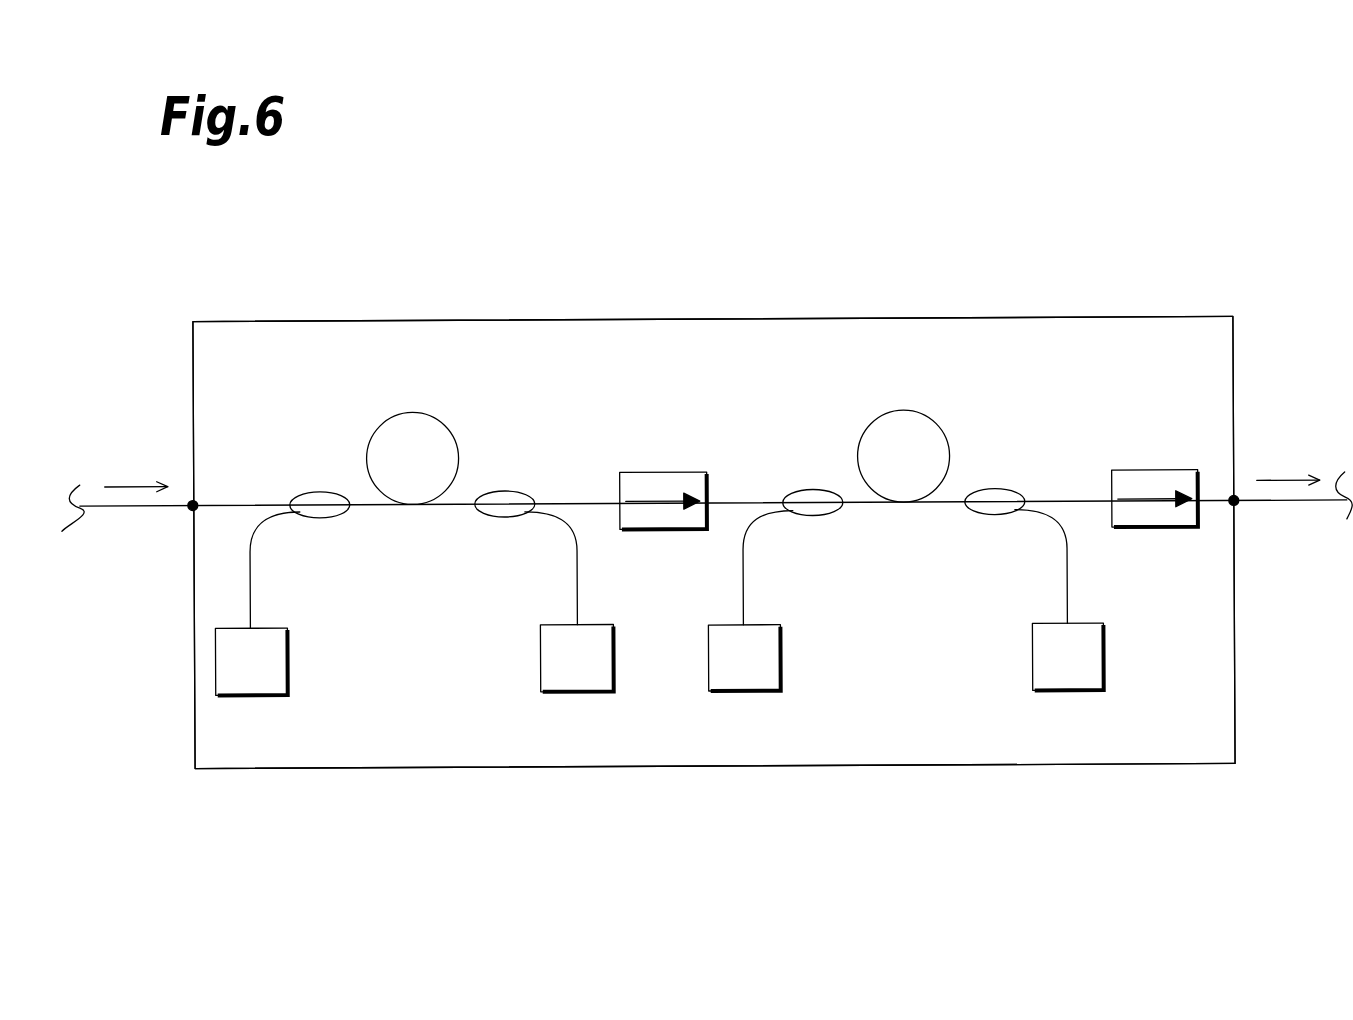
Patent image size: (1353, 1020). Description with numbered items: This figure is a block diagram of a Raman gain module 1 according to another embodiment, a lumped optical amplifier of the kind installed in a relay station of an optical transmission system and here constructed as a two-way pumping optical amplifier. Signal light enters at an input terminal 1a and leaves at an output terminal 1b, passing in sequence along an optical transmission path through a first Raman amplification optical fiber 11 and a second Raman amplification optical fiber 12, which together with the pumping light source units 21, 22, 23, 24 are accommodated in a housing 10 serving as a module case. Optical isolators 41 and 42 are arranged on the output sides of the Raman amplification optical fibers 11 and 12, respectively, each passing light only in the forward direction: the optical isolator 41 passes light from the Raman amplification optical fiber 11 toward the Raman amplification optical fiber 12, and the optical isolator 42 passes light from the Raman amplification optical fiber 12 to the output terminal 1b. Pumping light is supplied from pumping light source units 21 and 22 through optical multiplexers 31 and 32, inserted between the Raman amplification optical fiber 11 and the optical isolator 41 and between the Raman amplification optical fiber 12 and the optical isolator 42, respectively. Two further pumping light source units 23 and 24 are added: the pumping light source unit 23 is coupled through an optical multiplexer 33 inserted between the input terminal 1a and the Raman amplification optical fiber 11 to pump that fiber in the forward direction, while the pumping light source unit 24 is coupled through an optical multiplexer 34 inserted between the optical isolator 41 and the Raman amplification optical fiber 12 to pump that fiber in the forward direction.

The Raman gain module 1 is at (994, 305).
The input terminal 1a is at (188, 510).
The output terminal 1b is at (1238, 506).
The housing 10 is at (433, 319).
The Raman amplification optical fiber 11 is at (430, 412).
The Raman amplification optical fiber 12 is at (922, 411).
The pumping light source unit 21 is at (540, 660).
The pumping light source unit 22 is at (1105, 657).
The pumping light source unit 23 is at (289, 661).
The pumping light source unit 24 is at (781, 658).
The optical multiplexer 31 is at (512, 490).
The optical multiplexer 32 is at (1003, 490).
The optical multiplexer 33 is at (310, 490).
The optical multiplexer 34 is at (800, 490).
The optical isolator 41 is at (668, 472).
The optical isolator 42 is at (1160, 472).